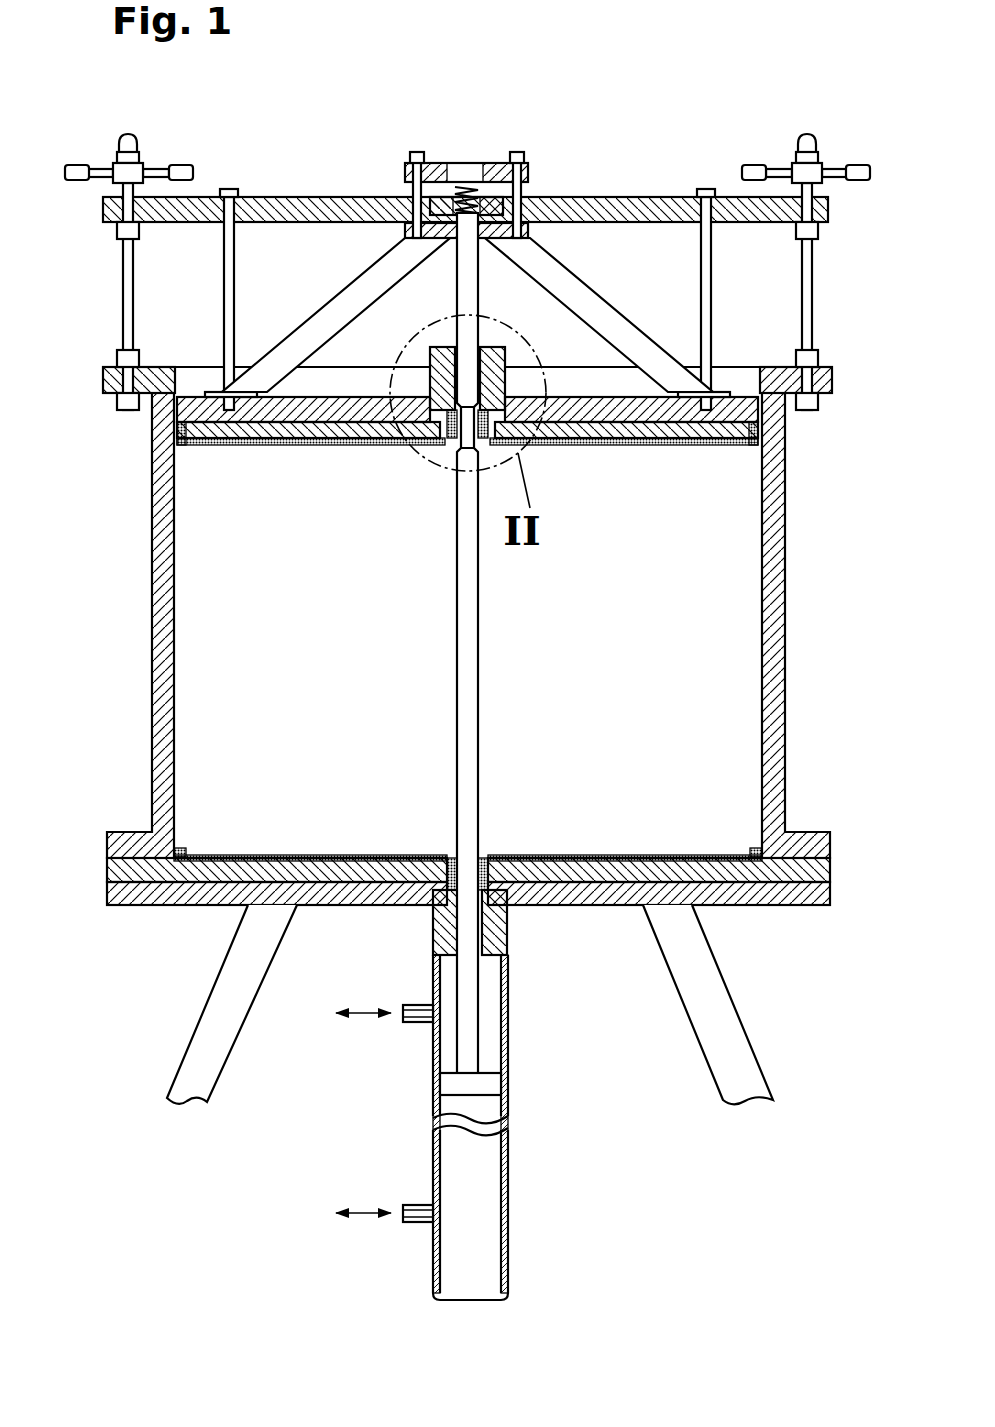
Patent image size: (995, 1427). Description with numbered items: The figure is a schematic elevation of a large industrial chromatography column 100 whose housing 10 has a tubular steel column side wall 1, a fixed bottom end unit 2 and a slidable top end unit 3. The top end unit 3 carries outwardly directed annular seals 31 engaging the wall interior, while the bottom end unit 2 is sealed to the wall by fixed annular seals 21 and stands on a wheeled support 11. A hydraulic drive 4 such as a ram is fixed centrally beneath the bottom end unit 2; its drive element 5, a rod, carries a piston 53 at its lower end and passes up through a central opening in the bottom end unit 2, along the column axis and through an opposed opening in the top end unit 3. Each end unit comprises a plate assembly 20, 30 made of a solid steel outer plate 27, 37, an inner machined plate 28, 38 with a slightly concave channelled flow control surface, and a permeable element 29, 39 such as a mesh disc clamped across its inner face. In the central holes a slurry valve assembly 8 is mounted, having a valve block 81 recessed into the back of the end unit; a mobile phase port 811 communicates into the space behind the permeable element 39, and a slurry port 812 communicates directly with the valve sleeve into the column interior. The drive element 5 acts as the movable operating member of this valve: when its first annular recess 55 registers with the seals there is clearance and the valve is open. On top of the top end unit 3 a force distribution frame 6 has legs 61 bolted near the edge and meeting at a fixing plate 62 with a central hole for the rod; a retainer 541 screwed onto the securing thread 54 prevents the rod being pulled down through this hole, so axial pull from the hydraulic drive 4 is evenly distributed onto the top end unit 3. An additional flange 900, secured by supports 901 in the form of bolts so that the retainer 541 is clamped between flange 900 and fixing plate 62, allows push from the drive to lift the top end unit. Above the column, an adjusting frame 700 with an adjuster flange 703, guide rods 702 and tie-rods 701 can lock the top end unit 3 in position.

The column side wall 1 is at (810, 557).
The bottom end unit 2 is at (468, 872).
The top end unit 3 is at (510, 405).
The hydraulic drive 4 is at (507, 1168).
The drive element 5 is at (479, 745).
The frame 6 is at (467, 307).
The slurry valve assembly 8 is at (469, 629).
The housing 10 is at (103, 733).
The wheeled support 11 is at (215, 1033).
The plate assembly 20 is at (318, 826).
The annular seals 21 is at (189, 853).
The outer plate 27 is at (738, 893).
The inner machined plate 28 is at (188, 882).
The permeable element 29 is at (612, 853).
The plate assembly 30 is at (318, 488).
The annular seals 31 is at (763, 430).
The outer plate 37 is at (668, 405).
The inner machined plate 38 is at (247, 430).
The permeable element 39 is at (608, 440).
The piston 53 is at (492, 1086).
The securing thread 54 is at (467, 186).
The first annular recess 55 is at (438, 452).
The legs 61 is at (364, 297).
The fixing plate 62 is at (527, 236).
The valve block 81 is at (486, 330).
The chromatography column 100 is at (439, 625).
The retainer 541 is at (440, 190).
The adjusting frame 700 is at (103, 285).
The tie-rods 701 is at (810, 293).
The guide rods 702 is at (712, 293).
The adjuster flange 703 is at (205, 203).
The mobile phase port 811 is at (438, 386).
The slurry port 812 is at (498, 354).
The additional flange 900 is at (497, 166).
The supports 901 is at (524, 181).